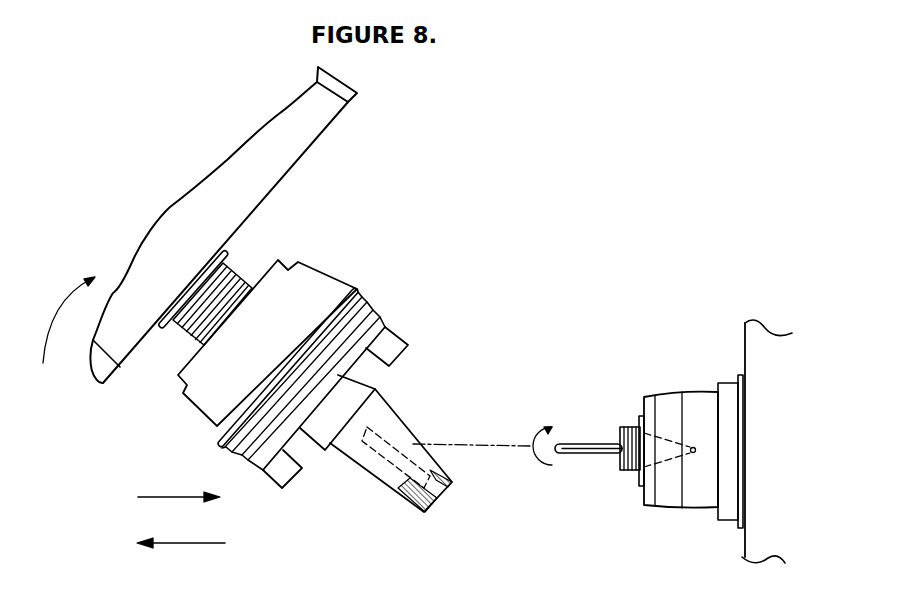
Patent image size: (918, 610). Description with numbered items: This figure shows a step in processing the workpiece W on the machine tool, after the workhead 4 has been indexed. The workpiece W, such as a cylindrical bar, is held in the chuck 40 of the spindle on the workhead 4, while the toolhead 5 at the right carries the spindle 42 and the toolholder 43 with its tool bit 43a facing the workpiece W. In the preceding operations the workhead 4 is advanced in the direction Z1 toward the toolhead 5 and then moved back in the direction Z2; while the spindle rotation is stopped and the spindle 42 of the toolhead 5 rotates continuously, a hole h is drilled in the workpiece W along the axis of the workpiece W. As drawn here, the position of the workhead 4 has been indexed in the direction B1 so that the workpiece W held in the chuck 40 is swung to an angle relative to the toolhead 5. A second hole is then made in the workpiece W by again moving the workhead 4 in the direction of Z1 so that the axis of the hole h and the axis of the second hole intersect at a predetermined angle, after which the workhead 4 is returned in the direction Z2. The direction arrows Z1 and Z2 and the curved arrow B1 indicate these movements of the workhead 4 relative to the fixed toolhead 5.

The workhead 4 is at (280, 162).
The chuck 40 is at (315, 288).
The spindle 42 is at (725, 383).
The toolholder 43 is at (622, 424).
The tool bit 43a is at (571, 443).
The toolhead 5 is at (766, 343).
The workpiece W is at (362, 456).
The hole h is at (437, 497).
The indexing direction B1 is at (66, 338).
The advance direction Z1 is at (179, 510).
The return direction Z2 is at (181, 558).